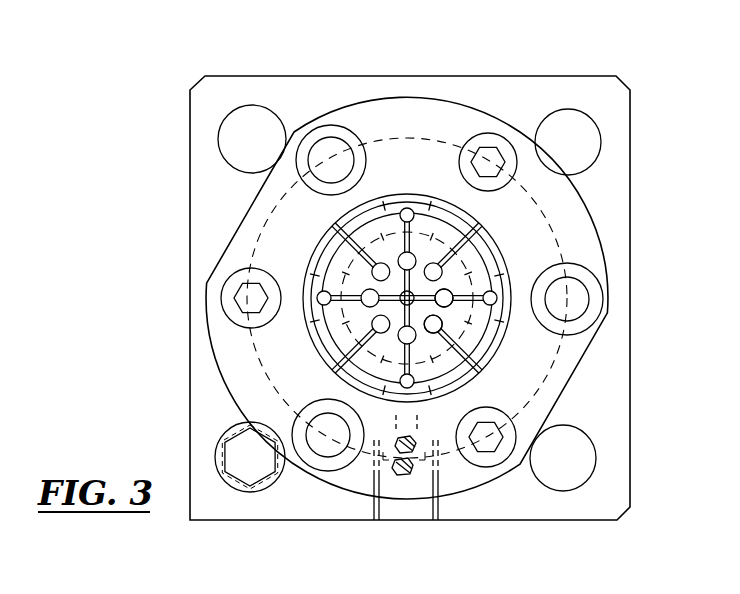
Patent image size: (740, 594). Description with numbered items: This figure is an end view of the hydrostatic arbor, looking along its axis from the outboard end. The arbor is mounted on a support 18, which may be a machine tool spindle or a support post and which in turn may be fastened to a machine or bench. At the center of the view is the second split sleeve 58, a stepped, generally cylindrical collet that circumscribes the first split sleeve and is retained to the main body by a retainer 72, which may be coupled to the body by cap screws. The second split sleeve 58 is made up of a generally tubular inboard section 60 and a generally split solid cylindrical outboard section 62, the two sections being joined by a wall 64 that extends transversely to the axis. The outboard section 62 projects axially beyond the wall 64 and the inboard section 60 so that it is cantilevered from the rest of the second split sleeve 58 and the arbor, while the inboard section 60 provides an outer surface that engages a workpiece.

The support 18 is at (538, 74).
The second split sleeve 58 is at (431, 190).
The inboard section 60 is at (499, 263).
The outboard section 62 is at (456, 326).
The wall 64 is at (447, 305).
The retainer 72 is at (614, 232).